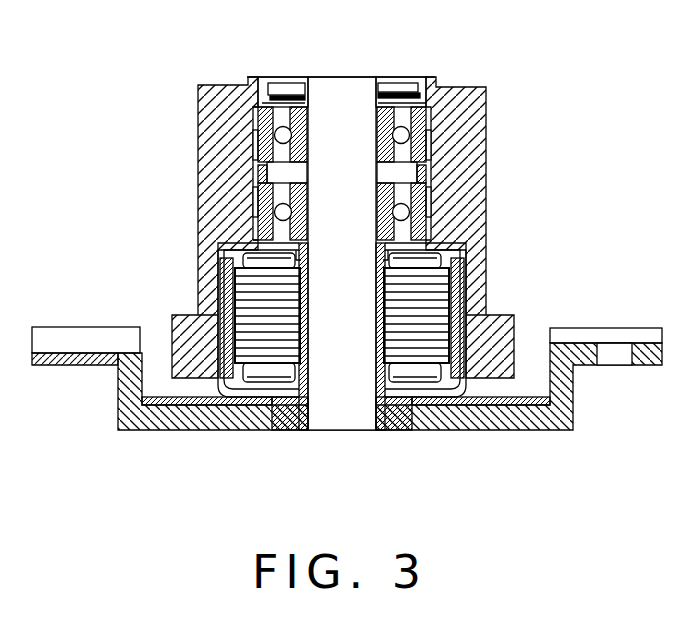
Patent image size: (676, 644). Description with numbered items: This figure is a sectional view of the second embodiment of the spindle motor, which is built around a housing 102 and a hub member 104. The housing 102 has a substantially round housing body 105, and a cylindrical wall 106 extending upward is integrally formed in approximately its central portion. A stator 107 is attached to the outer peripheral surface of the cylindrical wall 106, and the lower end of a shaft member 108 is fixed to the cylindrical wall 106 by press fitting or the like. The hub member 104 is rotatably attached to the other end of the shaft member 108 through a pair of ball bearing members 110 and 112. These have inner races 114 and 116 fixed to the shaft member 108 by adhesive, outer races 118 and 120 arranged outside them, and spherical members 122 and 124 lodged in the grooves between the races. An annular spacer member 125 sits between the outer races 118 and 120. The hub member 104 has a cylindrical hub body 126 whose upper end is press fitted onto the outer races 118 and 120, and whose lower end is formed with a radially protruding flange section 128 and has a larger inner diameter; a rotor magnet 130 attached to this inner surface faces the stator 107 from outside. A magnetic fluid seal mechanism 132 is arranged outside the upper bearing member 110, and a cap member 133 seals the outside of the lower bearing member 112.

The housing 102 is at (452, 440).
The hub member 104 is at (505, 195).
The housing body 105 is at (531, 420).
The cylindrical wall 106 is at (283, 431).
The stator 107 is at (232, 394).
The shaft member 108 is at (348, 415).
The bearing member 110 is at (240, 104).
The bearing member 112 is at (240, 229).
The inner race 114 is at (310, 120).
The inner race 116 is at (285, 212).
The outer race 118 is at (258, 123).
The outer race 120 is at (257, 217).
The spherical members 122 is at (287, 136).
The spherical members 124 is at (305, 240).
The annular spacer member 125 is at (433, 173).
The hub body 126 is at (480, 117).
The flange section 128 is at (503, 352).
The rotor magnet 130 is at (228, 280).
The magnetic fluid seal mechanism 132 is at (279, 66).
The cap member 133 is at (492, 265).